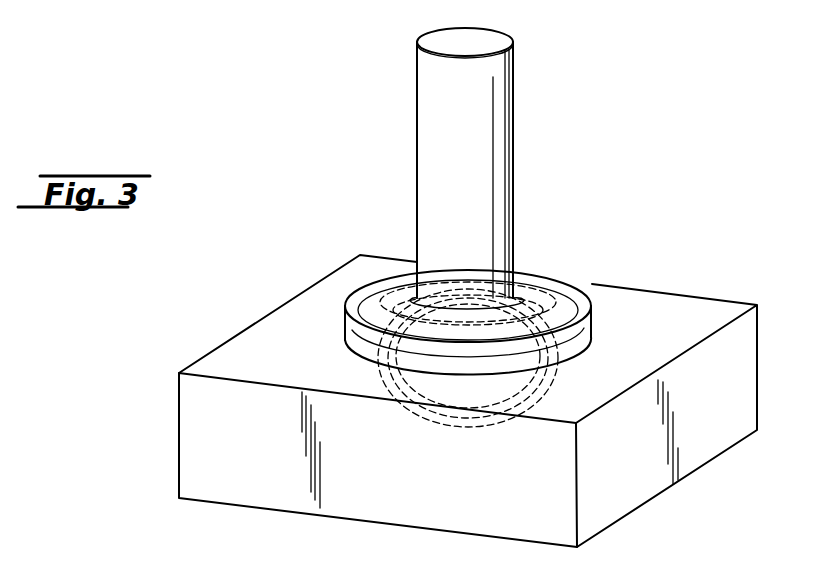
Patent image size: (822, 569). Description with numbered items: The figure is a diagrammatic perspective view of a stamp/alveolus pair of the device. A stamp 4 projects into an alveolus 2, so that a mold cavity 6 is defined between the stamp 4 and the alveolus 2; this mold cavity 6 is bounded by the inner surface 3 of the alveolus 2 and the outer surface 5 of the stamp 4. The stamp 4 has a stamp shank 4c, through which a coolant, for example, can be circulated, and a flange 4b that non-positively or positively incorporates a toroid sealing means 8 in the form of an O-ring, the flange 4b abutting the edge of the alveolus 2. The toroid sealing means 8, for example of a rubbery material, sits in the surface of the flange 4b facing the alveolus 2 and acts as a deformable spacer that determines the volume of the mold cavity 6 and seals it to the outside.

The alveolus 2 is at (672, 302).
The inner surface of the alveolus 3 is at (432, 427).
The stamp 4 is at (416, 147).
The flange 4b is at (547, 285).
The stamp shank 4c is at (485, 109).
The outer surface of the stamp 5 is at (467, 424).
The mold cavity 6 is at (496, 426).
The toroid sealing means 8 is at (520, 369).